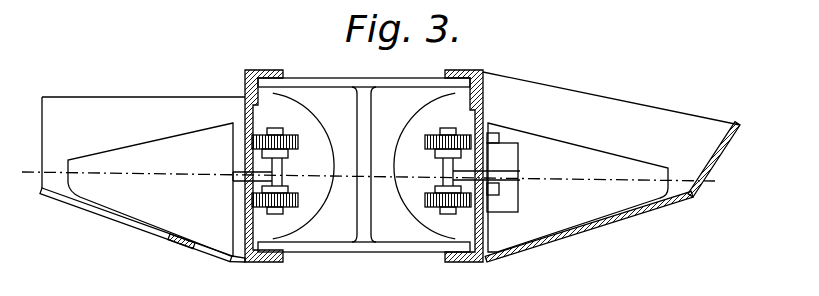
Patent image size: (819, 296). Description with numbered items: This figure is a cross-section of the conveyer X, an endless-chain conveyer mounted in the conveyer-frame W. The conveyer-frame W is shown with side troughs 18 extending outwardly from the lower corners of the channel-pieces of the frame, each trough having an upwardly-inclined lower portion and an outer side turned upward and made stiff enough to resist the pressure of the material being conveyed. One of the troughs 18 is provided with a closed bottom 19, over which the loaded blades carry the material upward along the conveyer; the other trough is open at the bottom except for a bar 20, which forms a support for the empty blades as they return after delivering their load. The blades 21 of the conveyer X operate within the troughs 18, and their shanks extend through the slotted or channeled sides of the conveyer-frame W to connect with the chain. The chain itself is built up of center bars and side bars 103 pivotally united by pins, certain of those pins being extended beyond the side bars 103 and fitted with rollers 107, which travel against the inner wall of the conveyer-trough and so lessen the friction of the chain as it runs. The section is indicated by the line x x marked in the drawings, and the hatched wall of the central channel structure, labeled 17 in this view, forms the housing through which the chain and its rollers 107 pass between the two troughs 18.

The housing / casing walls 17 is at (245, 88).
The side troughs 18 is at (119, 215).
The trough bottom 19 is at (576, 231).
The bar 20 is at (188, 240).
The blades 21 is at (368, 189).
The side bars 103 is at (245, 152).
The rollers 107 is at (263, 135).
The conveyer-frame W is at (40, 190).
The conveyer X is at (330, 165).
The line x x is at (365, 177).